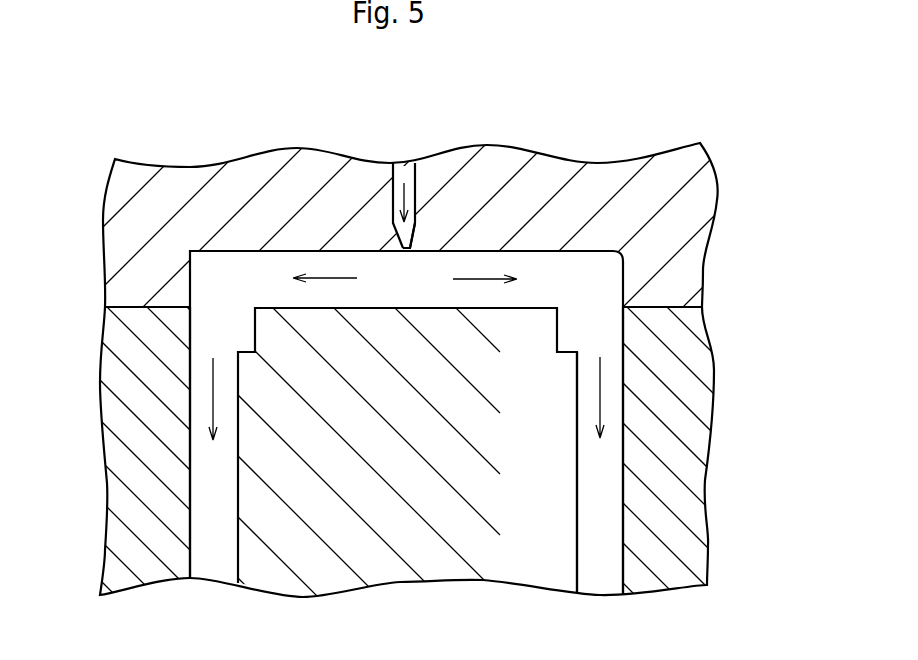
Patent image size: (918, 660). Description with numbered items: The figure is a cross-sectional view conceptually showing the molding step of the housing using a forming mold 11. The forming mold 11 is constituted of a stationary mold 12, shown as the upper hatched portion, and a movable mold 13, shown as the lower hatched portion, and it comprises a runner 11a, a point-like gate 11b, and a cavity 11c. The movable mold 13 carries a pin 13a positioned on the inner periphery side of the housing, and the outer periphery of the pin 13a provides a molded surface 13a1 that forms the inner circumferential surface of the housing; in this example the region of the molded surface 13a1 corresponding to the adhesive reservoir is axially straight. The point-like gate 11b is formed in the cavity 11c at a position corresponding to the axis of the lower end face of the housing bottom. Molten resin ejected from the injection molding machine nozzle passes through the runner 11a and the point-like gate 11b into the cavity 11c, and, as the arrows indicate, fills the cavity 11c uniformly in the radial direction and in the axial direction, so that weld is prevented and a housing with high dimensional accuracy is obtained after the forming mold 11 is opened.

The forming mold 11 is at (637, 147).
The runner 11a is at (395, 181).
The point-like gate 11b is at (417, 213).
The cavity 11c is at (590, 293).
The stationary mold 12 is at (126, 230).
The movable mold 13 is at (694, 511).
The pin 13a is at (442, 562).
The molded surface 13a1 is at (578, 472).